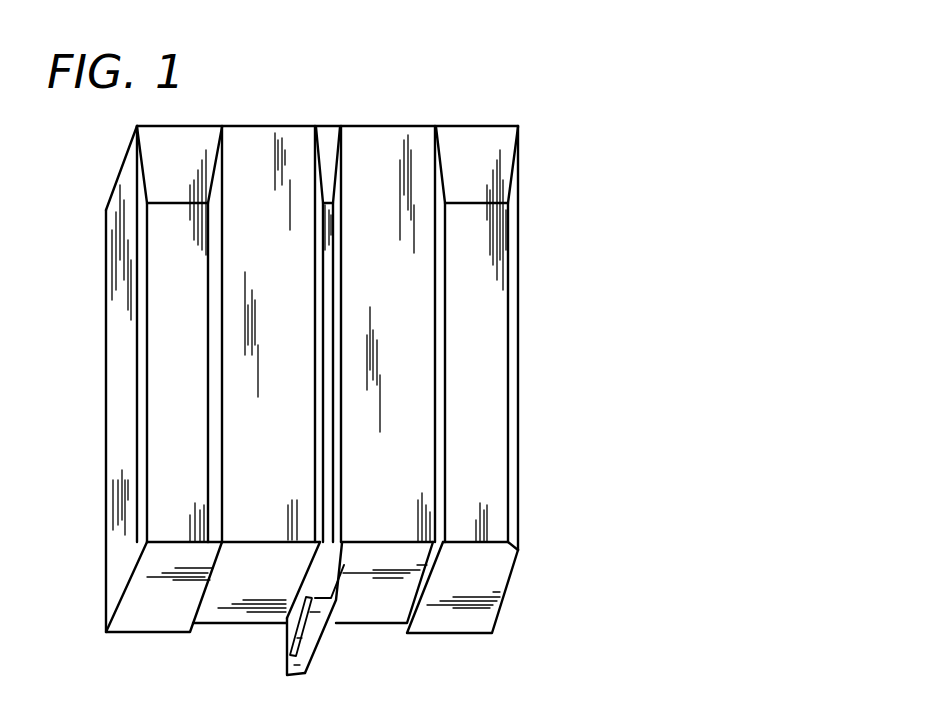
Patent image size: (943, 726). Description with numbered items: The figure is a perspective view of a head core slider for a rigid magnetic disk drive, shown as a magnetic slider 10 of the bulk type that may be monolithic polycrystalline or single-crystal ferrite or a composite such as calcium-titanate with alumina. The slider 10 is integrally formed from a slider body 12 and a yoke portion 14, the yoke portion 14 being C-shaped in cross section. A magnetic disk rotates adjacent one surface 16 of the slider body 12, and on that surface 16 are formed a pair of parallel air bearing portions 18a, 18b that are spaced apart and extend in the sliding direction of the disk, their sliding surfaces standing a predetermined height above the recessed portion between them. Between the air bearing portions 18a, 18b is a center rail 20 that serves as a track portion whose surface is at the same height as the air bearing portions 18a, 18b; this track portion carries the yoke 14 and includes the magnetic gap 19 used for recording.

The magnetic slider 10 is at (552, 85).
The slider body 12 is at (121, 271).
The yoke portion 14 is at (287, 652).
The surface of the slider body 16 is at (295, 126).
The air bearing portion 18a is at (160, 410).
The air bearing portion 18b is at (491, 393).
The magnetic gap 19 is at (337, 538).
The center rail 20 is at (332, 235).